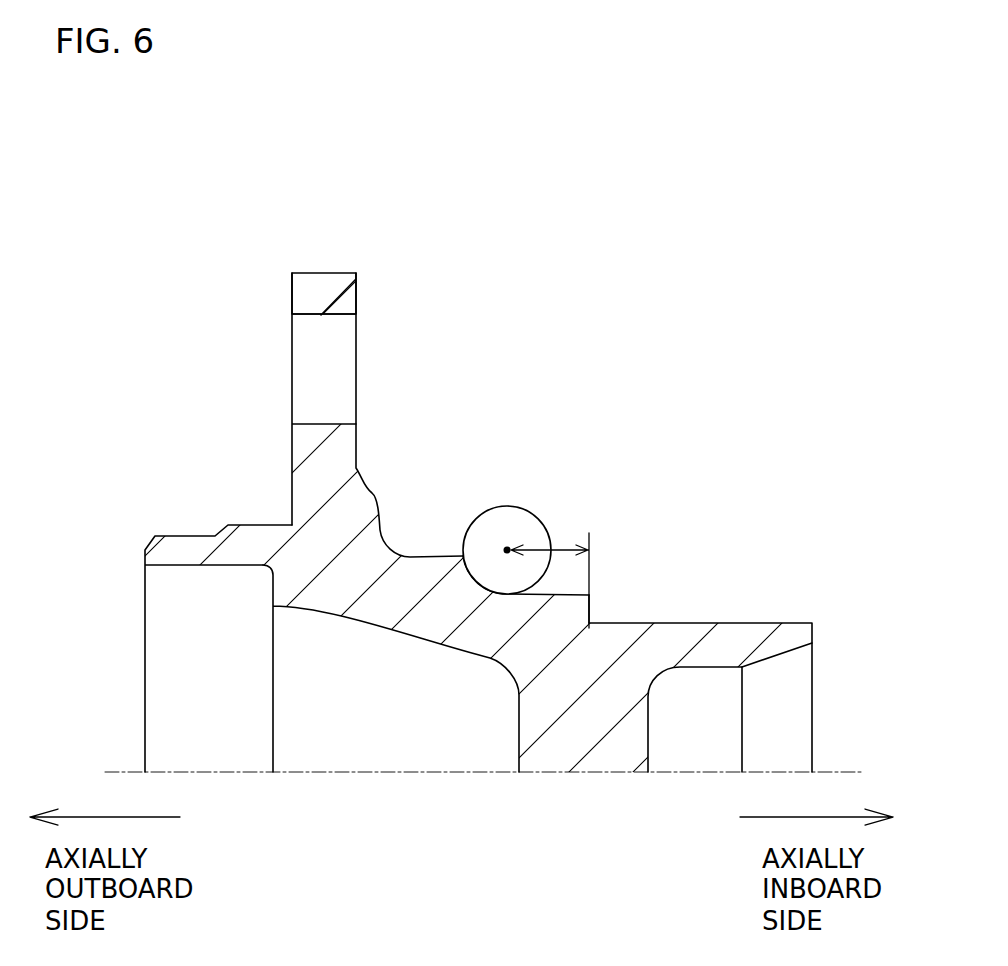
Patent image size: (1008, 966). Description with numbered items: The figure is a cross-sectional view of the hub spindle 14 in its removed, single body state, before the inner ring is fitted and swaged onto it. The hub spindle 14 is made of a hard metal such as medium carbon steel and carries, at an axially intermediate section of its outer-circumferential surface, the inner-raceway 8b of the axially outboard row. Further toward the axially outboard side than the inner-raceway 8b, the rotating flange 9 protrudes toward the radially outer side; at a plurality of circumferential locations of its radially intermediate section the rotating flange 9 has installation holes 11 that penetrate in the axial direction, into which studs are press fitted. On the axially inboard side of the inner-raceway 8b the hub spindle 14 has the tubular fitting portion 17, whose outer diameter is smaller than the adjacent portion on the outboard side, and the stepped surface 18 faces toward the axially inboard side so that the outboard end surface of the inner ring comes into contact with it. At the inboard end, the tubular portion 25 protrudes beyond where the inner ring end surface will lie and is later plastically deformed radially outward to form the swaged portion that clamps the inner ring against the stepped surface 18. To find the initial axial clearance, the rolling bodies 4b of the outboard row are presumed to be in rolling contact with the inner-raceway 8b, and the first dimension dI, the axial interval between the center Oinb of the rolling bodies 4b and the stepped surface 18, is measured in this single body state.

The rotating flange 9 is at (324, 283).
The installation holes 11 is at (337, 320).
The hub spindle 14 is at (201, 485).
The rolling bodies 4b is at (478, 508).
The inner-raceway 8b is at (513, 590).
The tubular fitting portion 17 is at (677, 622).
The stepped surface 18 is at (595, 611).
The tubular portion 25 is at (794, 634).
The center of the rolling bodies Oinb is at (507, 550).
The first dimension dI is at (547, 543).